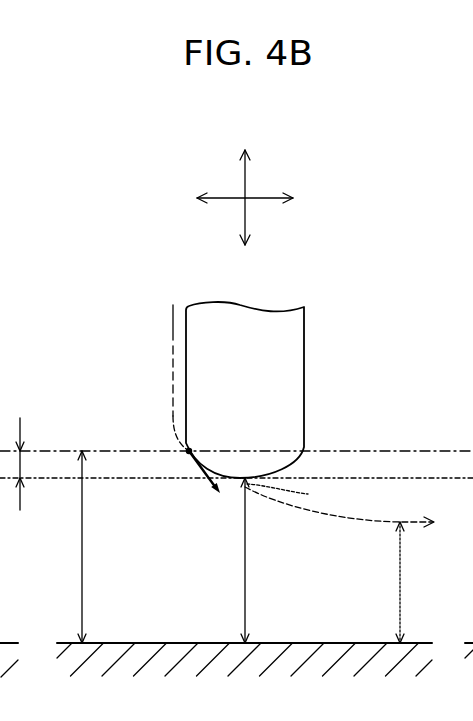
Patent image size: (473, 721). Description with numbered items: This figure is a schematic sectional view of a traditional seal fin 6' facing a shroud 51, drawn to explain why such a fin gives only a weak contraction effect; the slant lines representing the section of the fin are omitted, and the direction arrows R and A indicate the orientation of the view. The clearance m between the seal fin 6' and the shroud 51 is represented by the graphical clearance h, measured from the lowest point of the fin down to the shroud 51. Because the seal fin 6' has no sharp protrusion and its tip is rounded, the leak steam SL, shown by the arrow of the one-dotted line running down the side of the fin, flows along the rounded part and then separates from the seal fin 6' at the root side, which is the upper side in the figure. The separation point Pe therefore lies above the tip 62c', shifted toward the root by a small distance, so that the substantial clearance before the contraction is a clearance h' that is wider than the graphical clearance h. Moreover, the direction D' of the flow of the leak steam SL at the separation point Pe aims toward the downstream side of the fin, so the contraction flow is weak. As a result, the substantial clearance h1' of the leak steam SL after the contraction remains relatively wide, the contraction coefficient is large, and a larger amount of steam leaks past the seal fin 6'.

The traditional seal fin 6' is at (267, 390).
The tip 62c' is at (299, 495).
The shroud 51 is at (118, 642).
The leak steam SL is at (171, 333).
The separation point Pe is at (185, 448).
The direction of the flow of the leak steam D' is at (194, 478).
The clearance m is at (185, 543).
The graphical clearance h is at (254, 560).
The substantial clearance before the contraction h' is at (94, 547).
The substantial clearance after the contraction h1' is at (417, 582).
The R axis direction R is at (245, 182).
The A axis direction A is at (232, 199).